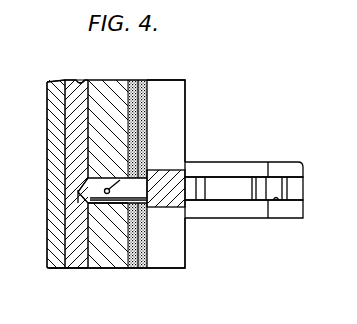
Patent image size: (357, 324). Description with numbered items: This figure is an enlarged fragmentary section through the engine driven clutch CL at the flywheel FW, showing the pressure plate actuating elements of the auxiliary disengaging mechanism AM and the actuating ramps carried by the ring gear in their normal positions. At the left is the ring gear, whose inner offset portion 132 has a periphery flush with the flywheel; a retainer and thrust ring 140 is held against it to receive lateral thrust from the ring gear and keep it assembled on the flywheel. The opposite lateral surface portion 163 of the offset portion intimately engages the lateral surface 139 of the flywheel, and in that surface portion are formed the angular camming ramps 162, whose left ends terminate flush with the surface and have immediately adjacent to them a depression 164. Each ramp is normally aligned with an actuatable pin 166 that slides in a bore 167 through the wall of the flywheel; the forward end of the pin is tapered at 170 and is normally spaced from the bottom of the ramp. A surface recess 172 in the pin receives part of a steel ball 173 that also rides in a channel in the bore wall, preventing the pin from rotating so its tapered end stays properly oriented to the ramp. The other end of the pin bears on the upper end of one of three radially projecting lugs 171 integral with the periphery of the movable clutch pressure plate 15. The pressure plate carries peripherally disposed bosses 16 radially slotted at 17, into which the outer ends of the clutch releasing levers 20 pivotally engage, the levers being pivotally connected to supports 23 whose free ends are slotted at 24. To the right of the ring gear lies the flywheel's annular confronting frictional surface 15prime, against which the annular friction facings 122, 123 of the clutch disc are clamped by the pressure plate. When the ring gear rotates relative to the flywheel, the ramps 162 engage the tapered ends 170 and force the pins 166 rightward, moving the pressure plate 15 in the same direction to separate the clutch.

The retainer and thrust ring 140 is at (54, 90).
The inner offset portion 132 is at (72, 86).
The opposite lateral surface portion 163 is at (81, 81).
The depression 164 is at (85, 148).
The tapered forward ends 170 is at (80, 192).
The angular camming ramps 162 is at (83, 198).
The bores 167 is at (92, 207).
The lateral surface 139 is at (78, 268).
The annular confronting frictional surface 15prime is at (122, 314).
The annular friction facing 122 is at (133, 269).
The annular friction facing 123 is at (147, 268).
The surface recess 172 is at (139, 219).
The steel ball 173 is at (146, 160).
The radially projecting lugs 171 is at (170, 169).
The actuatable plungers or pins 166 is at (140, 194).
The movable clutch pressure plate 15 is at (187, 256).
The radial slots 17 is at (226, 180).
The peripherally disposed bosses 16 is at (245, 167).
The clutch releasing levers 20 is at (233, 195).
The slots 24 is at (277, 201).
The supports 23 is at (297, 182).
The auxiliary clutch disengaging mechanism AM is at (180, 163).
The engine driven clutch CL is at (158, 80).
The flywheel FW is at (100, 258).